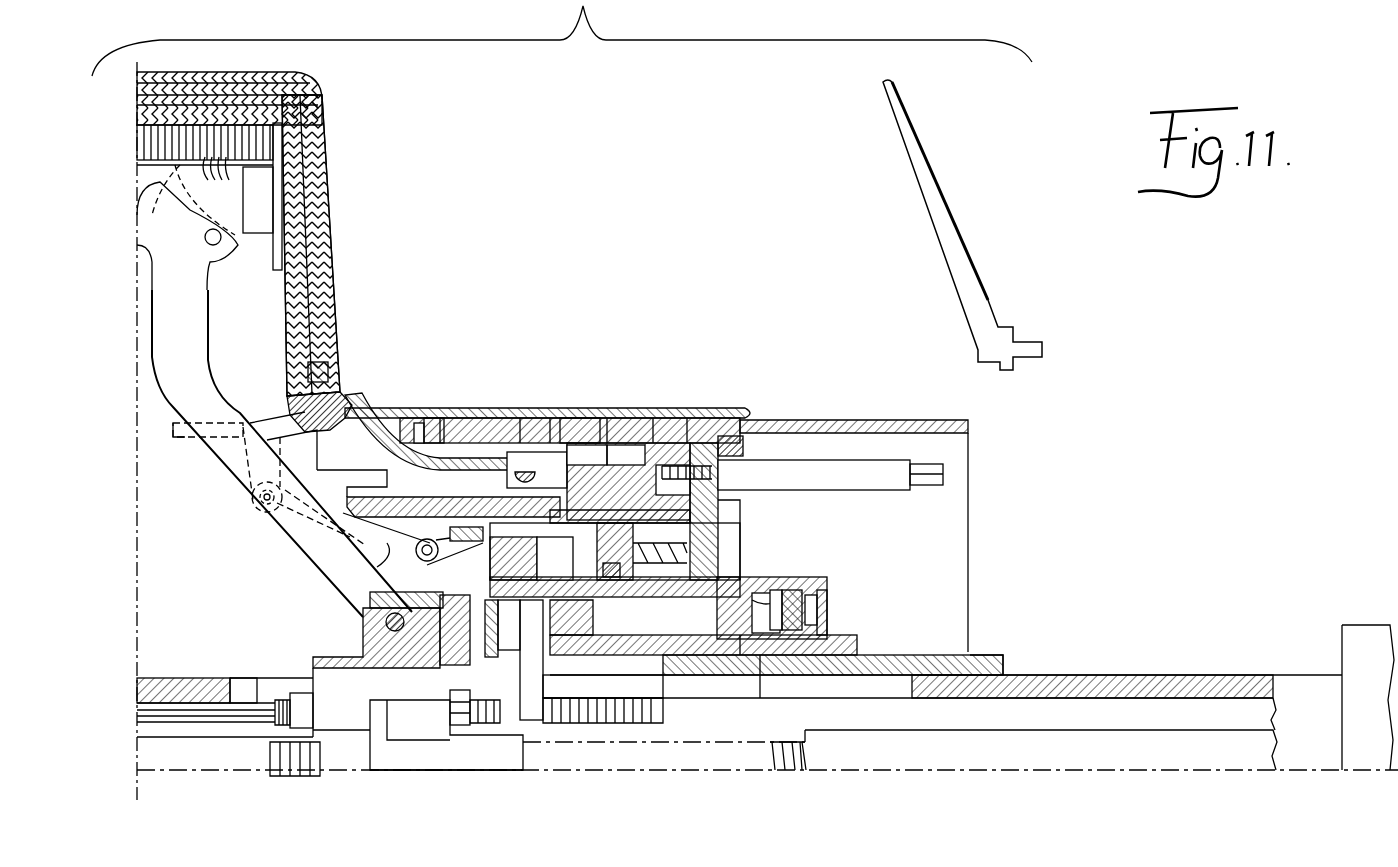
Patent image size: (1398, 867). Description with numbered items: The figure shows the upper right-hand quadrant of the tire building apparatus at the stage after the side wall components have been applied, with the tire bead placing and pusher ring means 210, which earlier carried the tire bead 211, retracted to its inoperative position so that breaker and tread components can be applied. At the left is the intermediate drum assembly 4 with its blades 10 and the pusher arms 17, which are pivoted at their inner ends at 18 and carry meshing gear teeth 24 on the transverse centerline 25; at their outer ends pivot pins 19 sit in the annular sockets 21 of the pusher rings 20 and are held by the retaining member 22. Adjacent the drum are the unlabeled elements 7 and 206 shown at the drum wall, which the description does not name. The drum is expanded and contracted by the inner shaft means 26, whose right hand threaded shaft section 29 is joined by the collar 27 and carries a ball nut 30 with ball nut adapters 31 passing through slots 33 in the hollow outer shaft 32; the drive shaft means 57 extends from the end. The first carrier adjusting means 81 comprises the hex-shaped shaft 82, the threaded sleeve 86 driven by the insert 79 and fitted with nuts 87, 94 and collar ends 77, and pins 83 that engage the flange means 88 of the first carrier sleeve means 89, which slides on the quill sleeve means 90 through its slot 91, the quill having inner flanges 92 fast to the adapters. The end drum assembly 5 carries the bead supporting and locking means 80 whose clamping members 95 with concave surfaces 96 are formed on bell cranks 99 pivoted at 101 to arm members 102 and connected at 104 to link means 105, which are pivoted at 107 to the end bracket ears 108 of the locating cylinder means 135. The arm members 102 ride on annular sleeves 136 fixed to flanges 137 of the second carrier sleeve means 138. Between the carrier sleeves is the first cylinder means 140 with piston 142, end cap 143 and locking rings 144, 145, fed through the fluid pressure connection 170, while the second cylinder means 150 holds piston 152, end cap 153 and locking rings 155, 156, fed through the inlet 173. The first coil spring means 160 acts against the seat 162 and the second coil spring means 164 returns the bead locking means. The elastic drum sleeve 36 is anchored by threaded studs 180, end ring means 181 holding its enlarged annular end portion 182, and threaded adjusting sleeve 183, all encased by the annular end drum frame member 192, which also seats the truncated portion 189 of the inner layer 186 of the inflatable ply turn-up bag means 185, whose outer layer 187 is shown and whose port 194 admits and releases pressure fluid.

The intermediate drum assembly 4 is at (122, 144).
The end drum assembly 5 is at (783, 348).
The rim wall 7 is at (323, 220).
The blades 10 is at (205, 160).
The pusher arms 17 is at (300, 542).
The pivot 18 is at (221, 240).
The pivot pins 19 is at (365, 615).
The pusher rings 20 is at (360, 637).
The annular sockets 21 is at (368, 670).
The retaining member 22 is at (368, 598).
The meshing gear teeth 24 is at (150, 197).
The transverse centerline 25 is at (137, 574).
The inner shaft means 26 is at (298, 784).
The collar 27 is at (217, 778).
The right hand threaded shaft section 29 is at (788, 775).
The ball nut 30 is at (450, 775).
The ball nut adapters 31 is at (405, 701).
The hollow outer shaft 32 is at (1110, 690).
The slots 33 is at (250, 682).
The elastic drum sleeve 36 is at (285, 296).
The drive shaft means 57 is at (1000, 745).
The collar ends 77 is at (300, 693).
The insert 79 is at (275, 717).
The bead supporting and locking means 80 is at (334, 433).
The first carrier adjusting means 81 is at (131, 720).
The hex-shaped shaft 82 is at (178, 712).
The pins 83 is at (525, 660).
The threaded sleeve 86 is at (612, 723).
The nut 87 is at (462, 720).
The flange means 88 is at (571, 616).
The first carrier sleeve means 89 is at (860, 645).
The quill sleeve means 90 is at (1004, 654).
The slot 91 is at (665, 668).
The inner flanges 92 is at (455, 625).
The nut 94 is at (511, 650).
The clamping members 95 is at (350, 408).
The concave surfaces 96 is at (338, 400).
The bell cranks 99 is at (240, 480).
The pivot 101 is at (266, 425).
The arm members 102 is at (178, 442).
The pivotal connection 104 is at (252, 512).
The link means 105 is at (380, 557).
The pivotal connection 107 is at (420, 560).
The end bracket ears 108 is at (450, 528).
The locating cylinder means 135 is at (586, 456).
The annular sleeves 136 is at (453, 492).
The flanges 137 is at (722, 515).
The second carrier sleeve means 138 is at (762, 583).
The first cylinder means 140 is at (792, 590).
The piston 142 is at (745, 660).
The end cap 143 is at (830, 622).
The locking ring 144 is at (780, 658).
The locking ring 145 is at (825, 598).
The second cylinder means 150 is at (598, 443).
The piston 152 is at (500, 530).
The end cap 153 is at (626, 456).
The locking ring 155 is at (518, 625).
The locking ring 156 is at (662, 443).
The first coil spring means 160 is at (712, 560).
The seat 162 is at (603, 688).
The second coil spring means 164 is at (814, 475).
The fluid pressure connection 170 is at (778, 590).
The fluid pressure inlet 173 is at (615, 551).
The threaded studs 180 is at (690, 430).
The end ring means 181 is at (555, 420).
The enlarged annular end portion 182 is at (520, 452).
The threaded adjusting sleeve 183 is at (898, 485).
The inflatable ply turn-up bag means 185 is at (703, 418).
The inner layer 186 is at (745, 443).
The outer layer 187 is at (738, 418).
The truncated portion 189 is at (438, 418).
The annular end drum frame member 192 is at (575, 443).
The port 194 is at (420, 423).
The rim flange 206 is at (323, 200).
The tire bead placing and pusher ring means 210 is at (960, 245).
The tire bead 211 is at (290, 358).